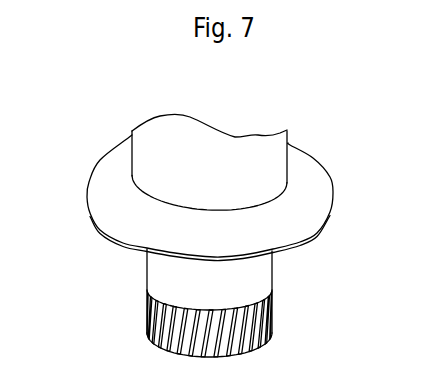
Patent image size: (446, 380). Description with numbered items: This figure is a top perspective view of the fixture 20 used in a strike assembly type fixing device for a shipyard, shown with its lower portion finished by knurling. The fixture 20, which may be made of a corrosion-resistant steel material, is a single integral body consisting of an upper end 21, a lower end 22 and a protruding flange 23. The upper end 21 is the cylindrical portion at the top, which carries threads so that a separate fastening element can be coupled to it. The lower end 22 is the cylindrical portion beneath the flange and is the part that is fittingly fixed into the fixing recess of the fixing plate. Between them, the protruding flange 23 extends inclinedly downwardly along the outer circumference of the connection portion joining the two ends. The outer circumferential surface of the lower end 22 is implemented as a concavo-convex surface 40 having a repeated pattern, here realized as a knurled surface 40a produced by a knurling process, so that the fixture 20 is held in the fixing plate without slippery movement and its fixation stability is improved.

The fixture 20 is at (345, 152).
The upper end 21 is at (137, 137).
The lower end 22 is at (257, 268).
The protruding flange 23 is at (100, 197).
The concavo-convex surface 40 is at (352, 339).
The knurled surface 40a is at (268, 330).